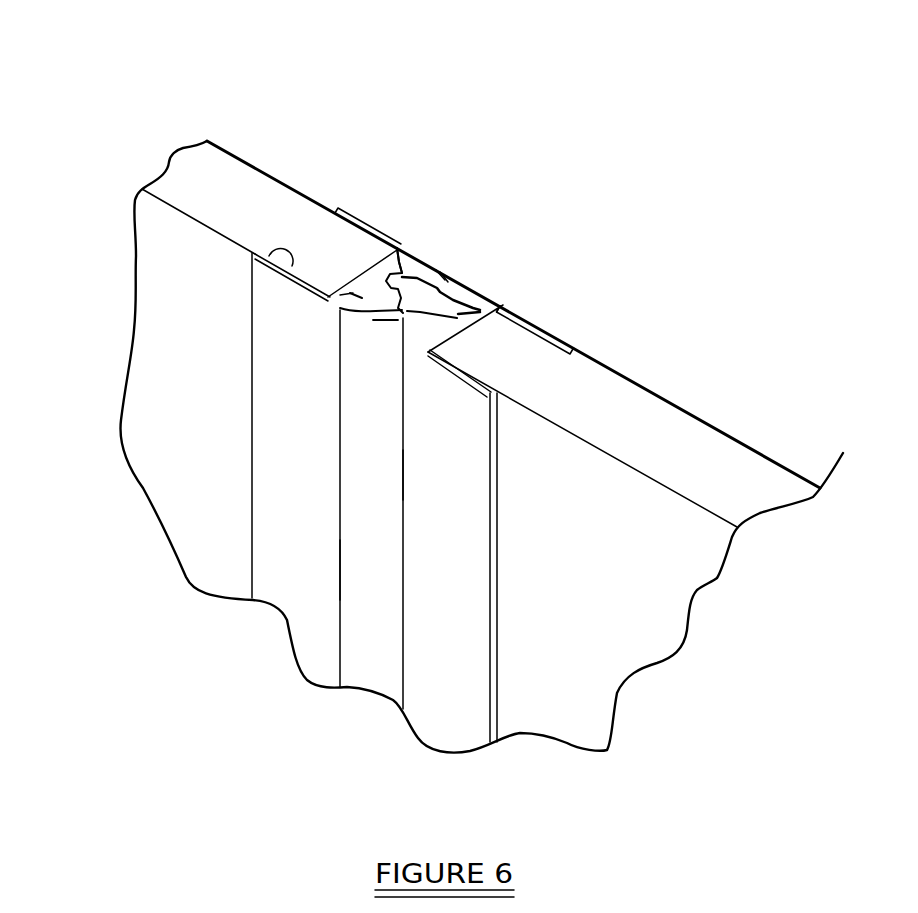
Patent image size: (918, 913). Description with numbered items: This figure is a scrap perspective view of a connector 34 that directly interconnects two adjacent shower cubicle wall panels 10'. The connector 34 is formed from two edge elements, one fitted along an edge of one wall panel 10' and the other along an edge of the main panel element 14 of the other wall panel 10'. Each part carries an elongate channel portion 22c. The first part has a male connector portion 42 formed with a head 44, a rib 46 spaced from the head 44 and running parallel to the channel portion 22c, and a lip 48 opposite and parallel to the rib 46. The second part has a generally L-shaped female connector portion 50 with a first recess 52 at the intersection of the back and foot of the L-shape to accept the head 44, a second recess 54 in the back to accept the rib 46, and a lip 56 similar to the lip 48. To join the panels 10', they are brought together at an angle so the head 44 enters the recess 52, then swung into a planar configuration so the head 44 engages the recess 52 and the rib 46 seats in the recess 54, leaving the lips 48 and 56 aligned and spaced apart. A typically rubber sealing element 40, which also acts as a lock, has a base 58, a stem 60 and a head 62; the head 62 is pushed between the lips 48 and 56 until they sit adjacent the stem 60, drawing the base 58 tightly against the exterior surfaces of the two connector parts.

The wall panel 10' is at (458, 447).
The main panel element 14 is at (250, 180).
The elongate channel portion 22c is at (562, 340).
The connector 34 is at (447, 214).
The head 44 is at (395, 273).
The first recess 52 is at (406, 257).
The second recess 54 is at (436, 270).
The rib 46 is at (440, 272).
The male connector portion 42 is at (499, 308).
The female connector portion 50 is at (350, 293).
The lip 56 is at (373, 318).
The lip 48 is at (366, 322).
The base 58 is at (340, 562).
The sealing element 40 is at (380, 463).
The stem 60 is at (403, 315).
The head 62 is at (407, 311).